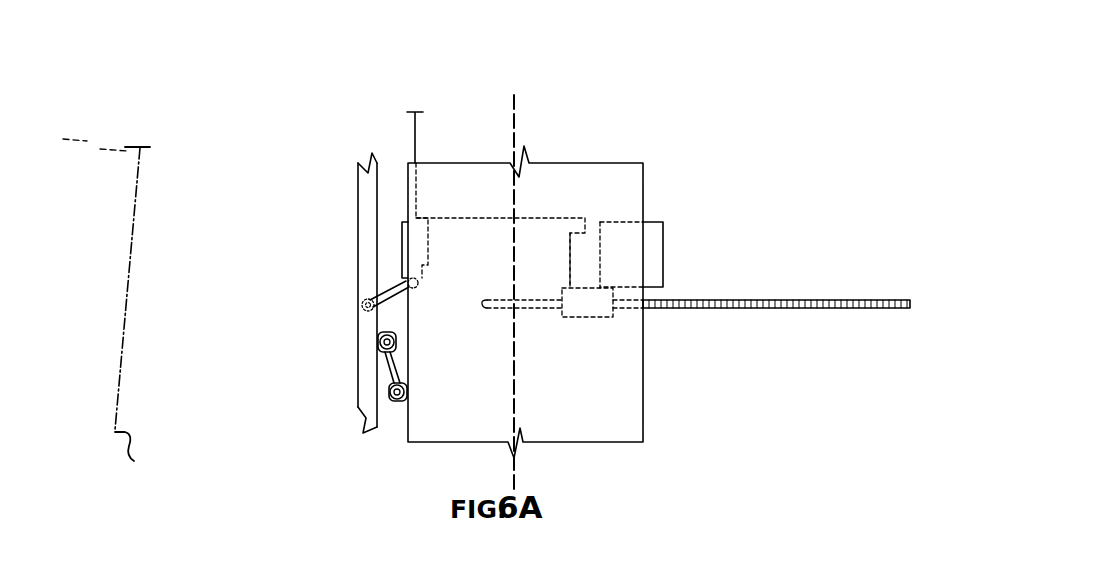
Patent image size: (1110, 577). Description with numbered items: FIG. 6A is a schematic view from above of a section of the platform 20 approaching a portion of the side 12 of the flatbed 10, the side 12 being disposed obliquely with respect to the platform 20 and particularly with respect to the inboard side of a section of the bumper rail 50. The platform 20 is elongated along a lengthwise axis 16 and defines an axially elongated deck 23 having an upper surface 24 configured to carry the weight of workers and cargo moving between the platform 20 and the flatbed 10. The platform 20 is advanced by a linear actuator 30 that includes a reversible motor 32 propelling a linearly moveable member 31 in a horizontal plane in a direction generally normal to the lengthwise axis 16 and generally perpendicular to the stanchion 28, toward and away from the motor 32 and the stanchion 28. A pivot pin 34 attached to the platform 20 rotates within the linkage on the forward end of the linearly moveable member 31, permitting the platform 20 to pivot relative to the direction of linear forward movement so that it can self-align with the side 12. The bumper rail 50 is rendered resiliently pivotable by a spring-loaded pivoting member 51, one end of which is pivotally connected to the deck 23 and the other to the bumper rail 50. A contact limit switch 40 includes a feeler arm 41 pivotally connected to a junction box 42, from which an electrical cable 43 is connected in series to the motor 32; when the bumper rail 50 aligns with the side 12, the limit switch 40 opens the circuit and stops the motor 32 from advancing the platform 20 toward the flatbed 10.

The flatbed 10 is at (93, 427).
The side of the flatbed 12 is at (139, 452).
The lengthwise axis 16 is at (516, 105).
The platform 20 is at (588, 88).
The deck 23 is at (612, 177).
The upper surface 24 is at (590, 395).
The stanchion 28 is at (658, 233).
The linear actuator 30 is at (603, 333).
The linearly moveable member 31 is at (735, 302).
The reversible motor 32 is at (573, 260).
The pivot pin 34 is at (485, 303).
The contact limit switch 40 is at (388, 263).
The feeler arm 41 is at (393, 297).
The junction box 42 is at (403, 222).
The electrical cable 43 is at (473, 213).
The bumper rail 50 is at (362, 407).
The pivoting member 51 is at (407, 367).